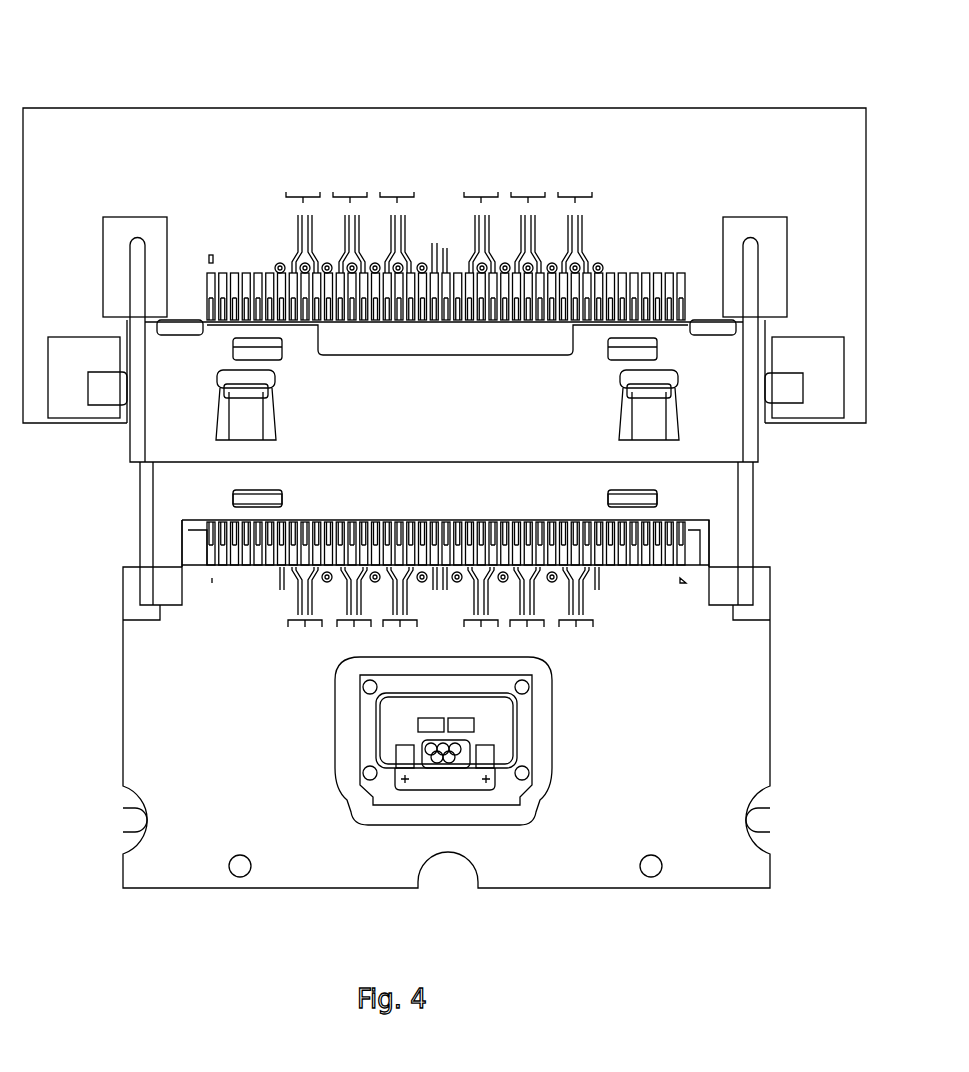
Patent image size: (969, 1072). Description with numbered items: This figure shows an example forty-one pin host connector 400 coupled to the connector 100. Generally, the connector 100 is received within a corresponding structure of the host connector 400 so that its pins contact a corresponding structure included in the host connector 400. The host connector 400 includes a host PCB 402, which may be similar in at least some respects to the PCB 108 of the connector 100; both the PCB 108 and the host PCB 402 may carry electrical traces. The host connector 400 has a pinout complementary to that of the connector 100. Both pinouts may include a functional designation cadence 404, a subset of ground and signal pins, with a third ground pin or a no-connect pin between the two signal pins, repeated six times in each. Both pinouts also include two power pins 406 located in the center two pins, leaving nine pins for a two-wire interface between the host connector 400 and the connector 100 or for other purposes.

The host connector 400 is at (144, 90).
The host PCB 402 is at (151, 191).
The functional designation cadence 404 is at (397, 192).
The power pins 406 is at (444, 238).
The connector 100 is at (110, 540).
The PCB 108 is at (252, 769).